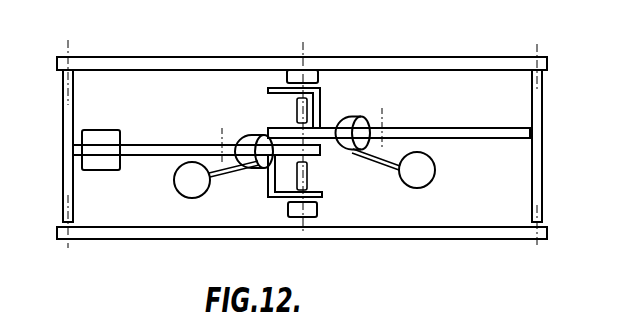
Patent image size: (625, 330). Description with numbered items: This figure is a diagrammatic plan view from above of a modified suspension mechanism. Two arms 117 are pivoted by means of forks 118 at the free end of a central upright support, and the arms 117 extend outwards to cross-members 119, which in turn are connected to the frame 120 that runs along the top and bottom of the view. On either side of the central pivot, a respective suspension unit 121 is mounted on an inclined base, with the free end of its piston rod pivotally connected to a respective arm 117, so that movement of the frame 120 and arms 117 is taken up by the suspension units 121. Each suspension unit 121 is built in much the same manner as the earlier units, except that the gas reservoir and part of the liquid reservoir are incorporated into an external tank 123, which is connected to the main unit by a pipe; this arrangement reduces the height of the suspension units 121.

The arm 117 is at (140, 148).
The fork 118 is at (275, 97).
The cross-member 119 is at (72, 112).
The frame 120 is at (265, 233).
The suspension unit 121 is at (351, 124).
The external tank 123 is at (191, 189).